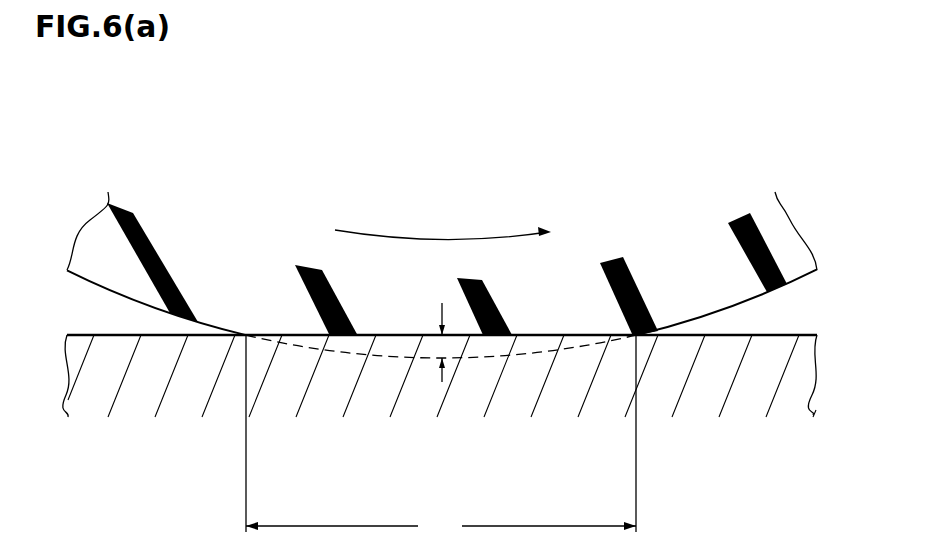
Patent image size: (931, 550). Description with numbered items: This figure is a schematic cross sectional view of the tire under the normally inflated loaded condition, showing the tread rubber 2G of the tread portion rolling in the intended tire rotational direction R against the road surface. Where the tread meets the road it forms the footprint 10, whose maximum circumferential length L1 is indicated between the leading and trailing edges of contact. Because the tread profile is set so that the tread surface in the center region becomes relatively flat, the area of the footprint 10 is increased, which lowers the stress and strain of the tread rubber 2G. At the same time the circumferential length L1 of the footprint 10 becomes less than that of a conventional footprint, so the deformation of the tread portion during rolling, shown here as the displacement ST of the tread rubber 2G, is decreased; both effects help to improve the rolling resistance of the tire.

The tread rubber 2G is at (117, 260).
The footprint 10 is at (380, 337).
The ground surface S is at (737, 335).
The displacement of the tread rubber ST is at (442, 340).
The maximum circumferential length of the footprint L1 is at (441, 437).
The intended tire rotational direction R is at (443, 224).